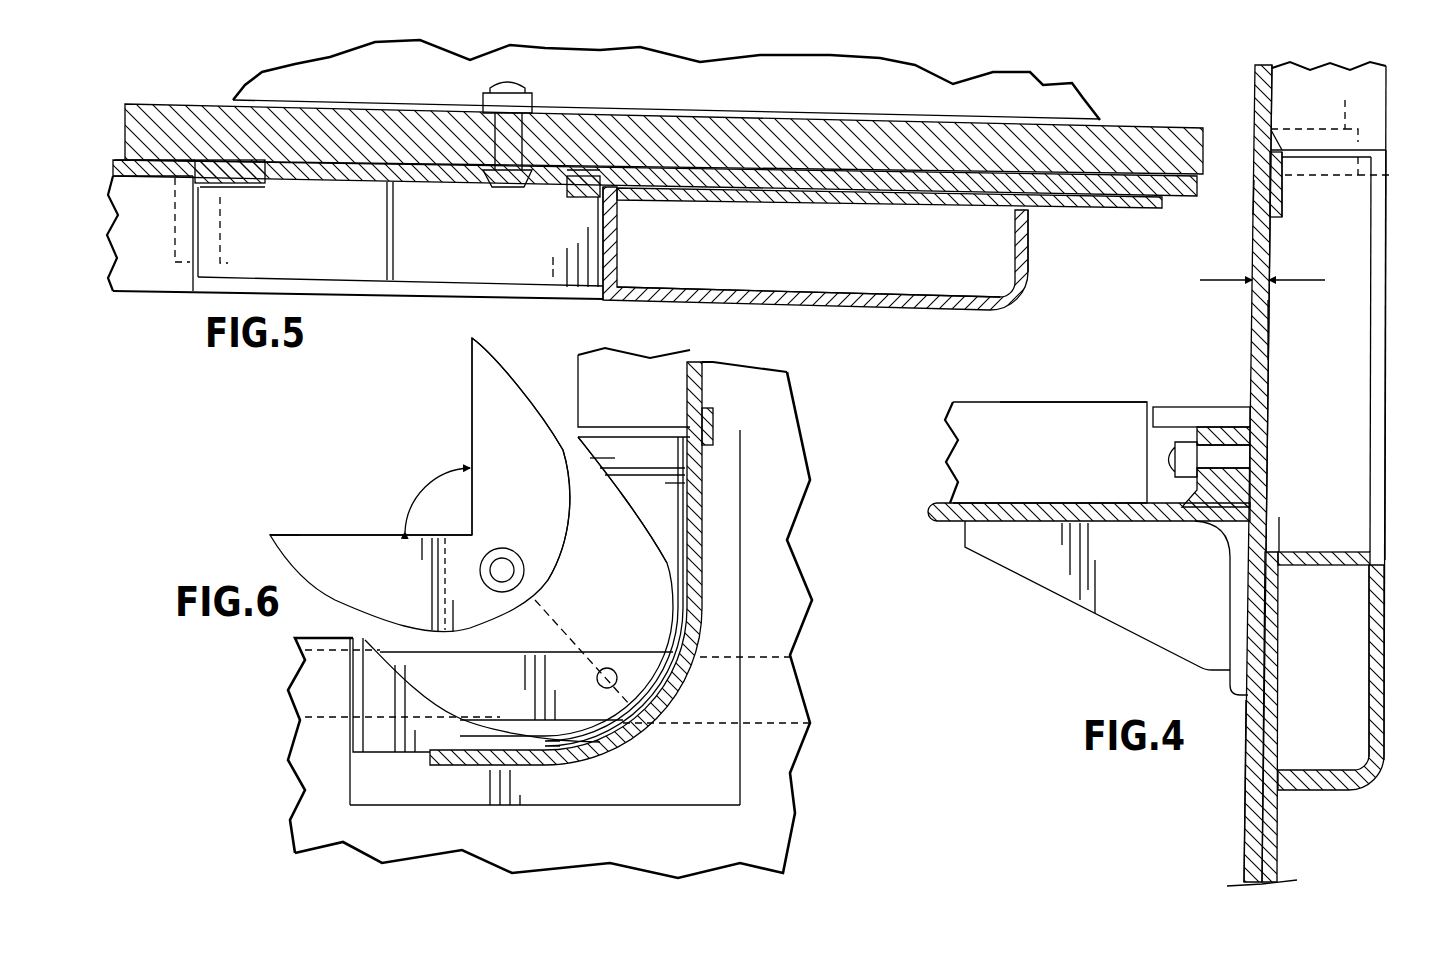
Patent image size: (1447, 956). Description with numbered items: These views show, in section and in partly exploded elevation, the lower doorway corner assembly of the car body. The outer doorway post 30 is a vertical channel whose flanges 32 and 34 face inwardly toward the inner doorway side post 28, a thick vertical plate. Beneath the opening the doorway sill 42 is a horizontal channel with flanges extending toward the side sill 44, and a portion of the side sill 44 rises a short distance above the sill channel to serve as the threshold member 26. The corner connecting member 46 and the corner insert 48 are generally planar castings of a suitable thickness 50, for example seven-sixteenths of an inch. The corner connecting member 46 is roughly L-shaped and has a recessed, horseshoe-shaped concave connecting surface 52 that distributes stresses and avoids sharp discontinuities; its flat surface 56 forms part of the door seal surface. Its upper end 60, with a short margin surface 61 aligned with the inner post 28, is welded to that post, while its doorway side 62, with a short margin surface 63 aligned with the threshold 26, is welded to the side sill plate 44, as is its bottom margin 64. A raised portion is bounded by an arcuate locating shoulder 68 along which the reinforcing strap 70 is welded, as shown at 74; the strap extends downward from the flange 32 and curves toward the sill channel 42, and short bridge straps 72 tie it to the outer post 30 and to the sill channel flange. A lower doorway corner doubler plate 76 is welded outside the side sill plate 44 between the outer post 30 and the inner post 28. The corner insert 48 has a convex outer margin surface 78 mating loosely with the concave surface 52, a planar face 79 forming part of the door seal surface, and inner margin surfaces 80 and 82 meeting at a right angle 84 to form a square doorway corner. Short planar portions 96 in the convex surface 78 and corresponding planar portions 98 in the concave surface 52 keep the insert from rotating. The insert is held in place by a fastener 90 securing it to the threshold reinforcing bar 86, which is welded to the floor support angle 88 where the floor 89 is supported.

In FIG. 5, the threshold member 26 is at (154, 176).
In FIG. 6, the threshold member 26 is at (302, 662).
In FIG. 4, the inner doorway side post 28 is at (1252, 84).
In FIG. 6, the inner doorway side post 28 is at (579, 382).
In FIG. 5, the outer doorway post 30 is at (943, 314).
In FIG. 4, the outer doorway post 30 is at (1387, 132).
In FIG. 4, the flange of outer post 32 is at (1366, 86).
In FIG. 5, the flange of outer post 34 is at (1028, 246).
In FIG. 5, the doorway sill 42 is at (126, 288).
In FIG. 4, the doorway sill 42 is at (1376, 668).
In FIG. 5, the side sill 44 is at (1180, 200).
In FIG. 4, the side sill 44 is at (1248, 794).
In FIG. 5, the corner connecting member 46 is at (247, 183).
In FIG. 6, the corner connecting member 46 is at (636, 490).
In FIG. 5, the corner insert 48 is at (418, 180).
In FIG. 4, the corner insert 48 is at (1250, 342).
In FIG. 6, the corner insert 48 is at (350, 542).
In FIG. 4, the thickness 50 is at (1220, 282).
In FIG. 5, the concave connecting surface 52 is at (266, 183).
In FIG. 4, the concave connecting surface 52 is at (1253, 510).
In FIG. 6, the concave connecting surface 52 is at (418, 694).
In FIG. 5, the flat surface 56 is at (588, 196).
In FIG. 4, the flat surface 56 is at (1282, 190).
In FIG. 6, the flat surface 56 is at (634, 454).
In FIG. 4, the upper end 60 is at (1256, 145).
In FIG. 6, the margin surface 61 is at (558, 435).
In FIG. 5, the doorway side 62 is at (182, 160).
In FIG. 6, the margin surface 63 is at (368, 642).
In FIG. 4, the bottom margin 64 is at (1232, 634).
In FIG. 5, the locating shoulder 68 is at (618, 198).
In FIG. 4, the locating shoulder 68 is at (1280, 565).
In FIG. 6, the locating shoulder 68 is at (634, 749).
In FIG. 5, the reinforcing strap 70 is at (617, 260).
In FIG. 4, the reinforcing strap 70 is at (1350, 269).
In FIG. 6, the reinforcing strap 70 is at (704, 510).
In FIG. 5, the bridge strap 72 is at (168, 269).
In FIG. 4, the bridge strap 72 is at (1402, 175).
In FIG. 6, the bridge strap 72 is at (713, 424).
In FIG. 4, the weld 74 is at (1282, 216).
In FIG. 6, the weld 74 is at (682, 598).
In FIG. 5, the lower doorway corner doubler plate 76 is at (1140, 210).
In FIG. 4, the lower doorway corner doubler plate 76 is at (1270, 824).
In FIG. 5, the convex outer margin surface 78 is at (588, 165).
In FIG. 4, the convex outer margin surface 78 is at (1252, 216).
In FIG. 6, the convex outer margin surface 78 is at (556, 568).
In FIG. 5, the planar face 79 is at (357, 185).
In FIG. 4, the planar face 79 is at (1270, 338).
In FIG. 6, the planar face 79 is at (479, 444).
In FIG. 6, the inner margin surface 80 is at (471, 386).
In FIG. 6, the inner margin surface 82 is at (300, 534).
In FIG. 6, the right angle 84 is at (427, 483).
In FIG. 5, the threshold reinforcing bar 86 is at (350, 116).
In FIG. 4, the threshold reinforcing bar 86 is at (1209, 407).
In FIG. 6, the threshold reinforcing bar 86 is at (564, 655).
In FIG. 5, the floor support angle 88 is at (258, 78).
In FIG. 4, the floor support angle 88 is at (1024, 500).
In FIG. 4, the floor 89 is at (1085, 399).
In FIG. 5, the bolt 90 is at (508, 188).
In FIG. 4, the bolt 90 is at (1258, 450).
In FIG. 6, the planar portions 96 is at (578, 517).
In FIG. 6, the planar portions 98 is at (674, 630).